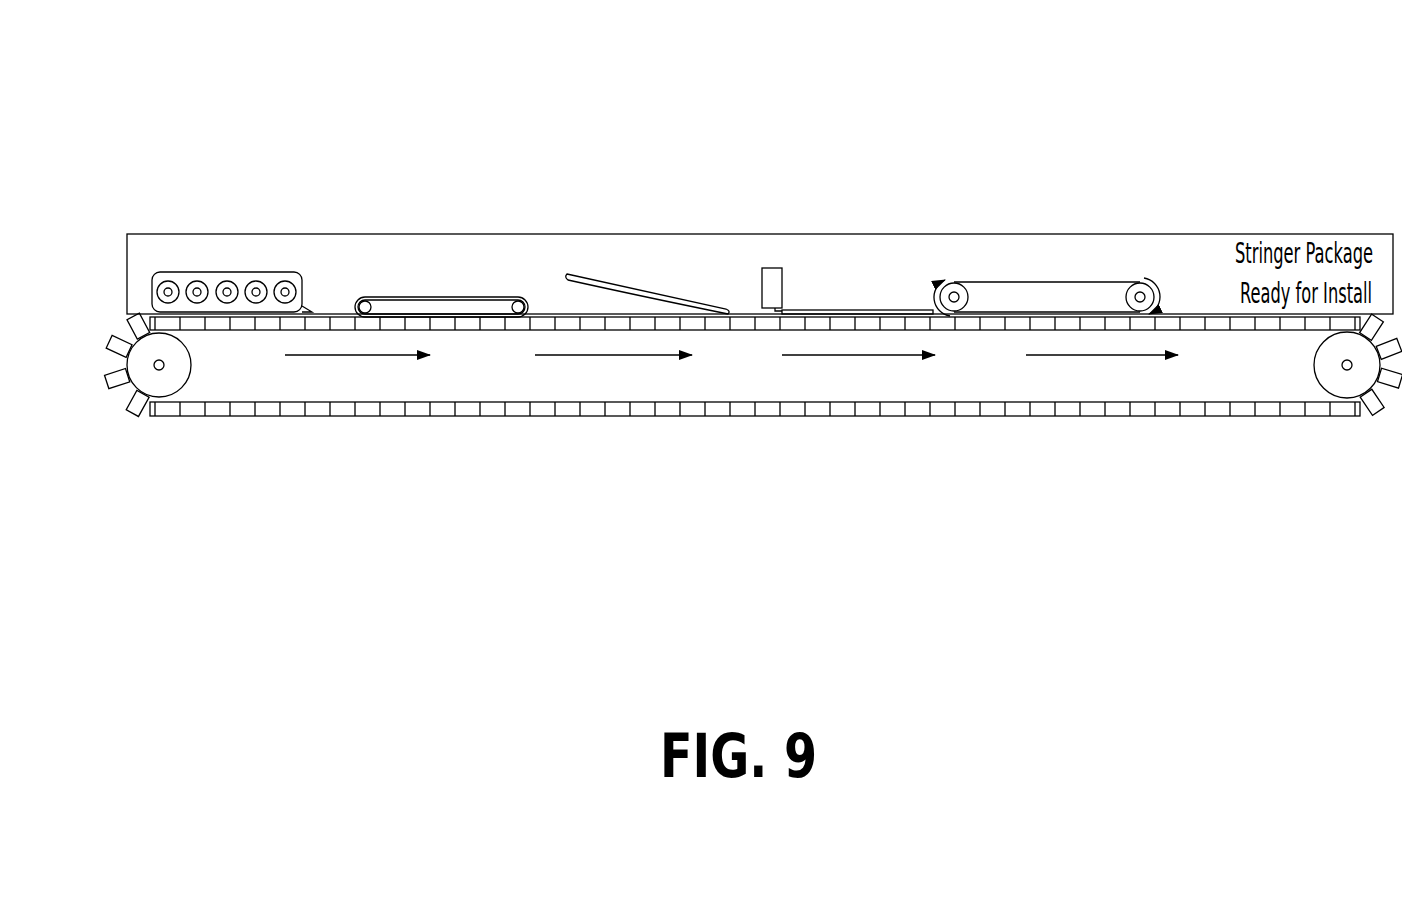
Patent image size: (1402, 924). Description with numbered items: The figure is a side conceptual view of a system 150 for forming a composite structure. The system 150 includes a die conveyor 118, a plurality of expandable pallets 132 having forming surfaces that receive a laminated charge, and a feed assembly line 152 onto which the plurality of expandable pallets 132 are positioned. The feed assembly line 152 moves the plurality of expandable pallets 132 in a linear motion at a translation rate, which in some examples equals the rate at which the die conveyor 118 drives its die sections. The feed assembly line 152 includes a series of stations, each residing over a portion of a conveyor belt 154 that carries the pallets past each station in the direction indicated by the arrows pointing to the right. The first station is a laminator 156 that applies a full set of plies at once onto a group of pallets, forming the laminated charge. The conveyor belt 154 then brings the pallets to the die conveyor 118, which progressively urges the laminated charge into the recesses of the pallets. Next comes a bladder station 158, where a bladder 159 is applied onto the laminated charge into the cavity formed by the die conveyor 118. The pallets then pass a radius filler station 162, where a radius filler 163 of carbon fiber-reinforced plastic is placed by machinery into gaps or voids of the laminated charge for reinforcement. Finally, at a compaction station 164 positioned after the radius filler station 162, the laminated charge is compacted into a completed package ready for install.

The system 150 is at (263, 113).
The feed assembly line 152 is at (122, 268).
The conveyor belt 154 is at (233, 433).
The plurality of expandable pallets 132 is at (335, 417).
The laminator 156 is at (210, 230).
The die conveyor 118 is at (433, 233).
The bladder station 158 is at (633, 233).
The bladder 159 is at (563, 270).
The radius filler station 162 is at (850, 233).
The radius filler 163 is at (812, 305).
The compaction station 164 is at (1032, 233).